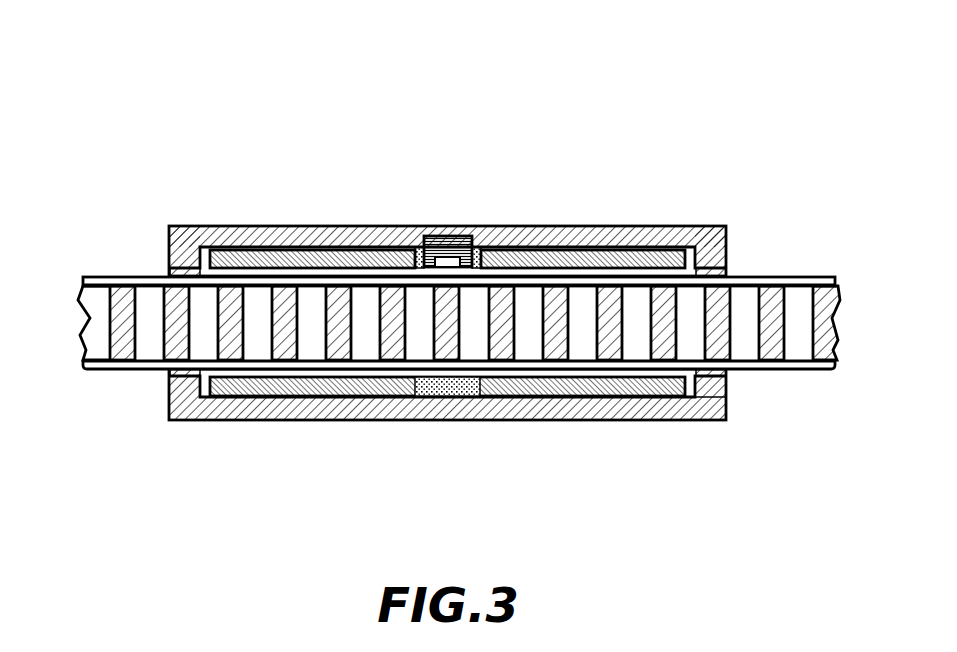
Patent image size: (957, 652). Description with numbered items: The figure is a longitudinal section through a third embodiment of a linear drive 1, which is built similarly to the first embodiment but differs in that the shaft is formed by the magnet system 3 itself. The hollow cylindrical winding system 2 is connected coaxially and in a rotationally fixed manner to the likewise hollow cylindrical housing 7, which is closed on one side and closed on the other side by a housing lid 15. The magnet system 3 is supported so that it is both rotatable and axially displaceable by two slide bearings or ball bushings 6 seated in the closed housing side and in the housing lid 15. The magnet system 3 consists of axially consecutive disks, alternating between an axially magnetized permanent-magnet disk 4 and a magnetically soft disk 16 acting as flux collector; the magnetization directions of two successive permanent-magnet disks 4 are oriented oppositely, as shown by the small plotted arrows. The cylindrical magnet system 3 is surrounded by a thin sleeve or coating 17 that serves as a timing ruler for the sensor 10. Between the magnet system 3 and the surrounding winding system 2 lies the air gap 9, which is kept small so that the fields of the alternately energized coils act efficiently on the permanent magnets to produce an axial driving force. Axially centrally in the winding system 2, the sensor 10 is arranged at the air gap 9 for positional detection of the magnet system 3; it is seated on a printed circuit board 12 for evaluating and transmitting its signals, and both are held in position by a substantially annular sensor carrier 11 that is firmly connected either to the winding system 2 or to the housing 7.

The linear drive 1 is at (691, 154).
The winding system 2 is at (270, 257).
The magnet system 3 is at (770, 285).
The axially magnetized permanent magnet disk 4 is at (103, 322).
The slide bearing or ball bushing 6 is at (193, 270).
The housing 7 is at (212, 232).
The air gap 9 is at (553, 275).
The sensor 10 is at (450, 260).
The sensor carrier 11 is at (477, 260).
The printed circuit board 12 is at (435, 237).
The housing lid 15 is at (706, 385).
The magnetically soft disk 16 is at (125, 292).
The sleeve or coating 17 is at (825, 292).